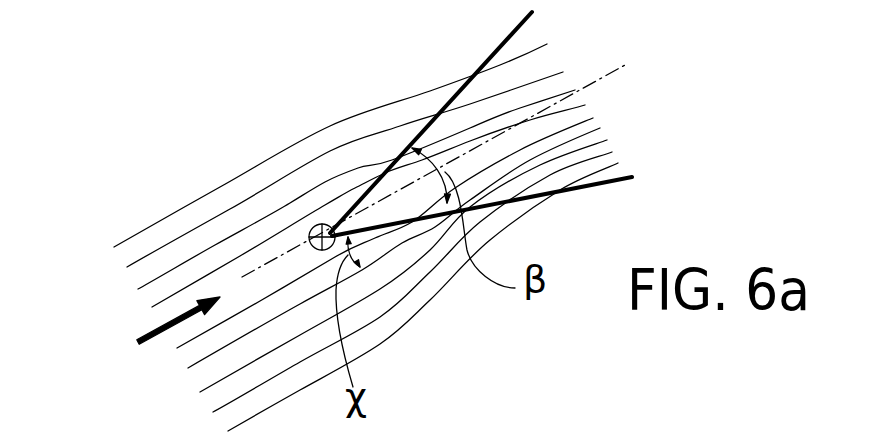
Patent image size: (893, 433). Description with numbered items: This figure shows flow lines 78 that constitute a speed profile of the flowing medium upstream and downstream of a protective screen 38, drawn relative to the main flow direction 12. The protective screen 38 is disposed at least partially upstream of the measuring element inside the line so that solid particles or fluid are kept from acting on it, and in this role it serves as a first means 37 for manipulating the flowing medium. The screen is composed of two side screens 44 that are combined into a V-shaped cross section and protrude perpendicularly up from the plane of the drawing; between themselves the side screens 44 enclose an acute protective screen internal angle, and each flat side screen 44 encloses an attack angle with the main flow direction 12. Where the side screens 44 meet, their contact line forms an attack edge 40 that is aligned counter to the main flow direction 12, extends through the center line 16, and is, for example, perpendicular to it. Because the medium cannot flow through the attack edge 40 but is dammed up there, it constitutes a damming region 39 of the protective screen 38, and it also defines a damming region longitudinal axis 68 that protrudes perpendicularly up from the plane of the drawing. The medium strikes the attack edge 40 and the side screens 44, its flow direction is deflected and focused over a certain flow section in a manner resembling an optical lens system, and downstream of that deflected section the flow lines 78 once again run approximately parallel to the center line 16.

The main flow direction 12 is at (148, 335).
The center line 16 is at (597, 82).
The first means for manipulating the flowing medium 37 is at (381, 122).
The protective screen 38 is at (397, 152).
The damming region 39 is at (189, 188).
The attack edge 40 is at (189, 188).
The side screen 44 is at (463, 124).
The damming region longitudinal axis 68 is at (319, 225).
The flow lines 78 is at (376, 321).